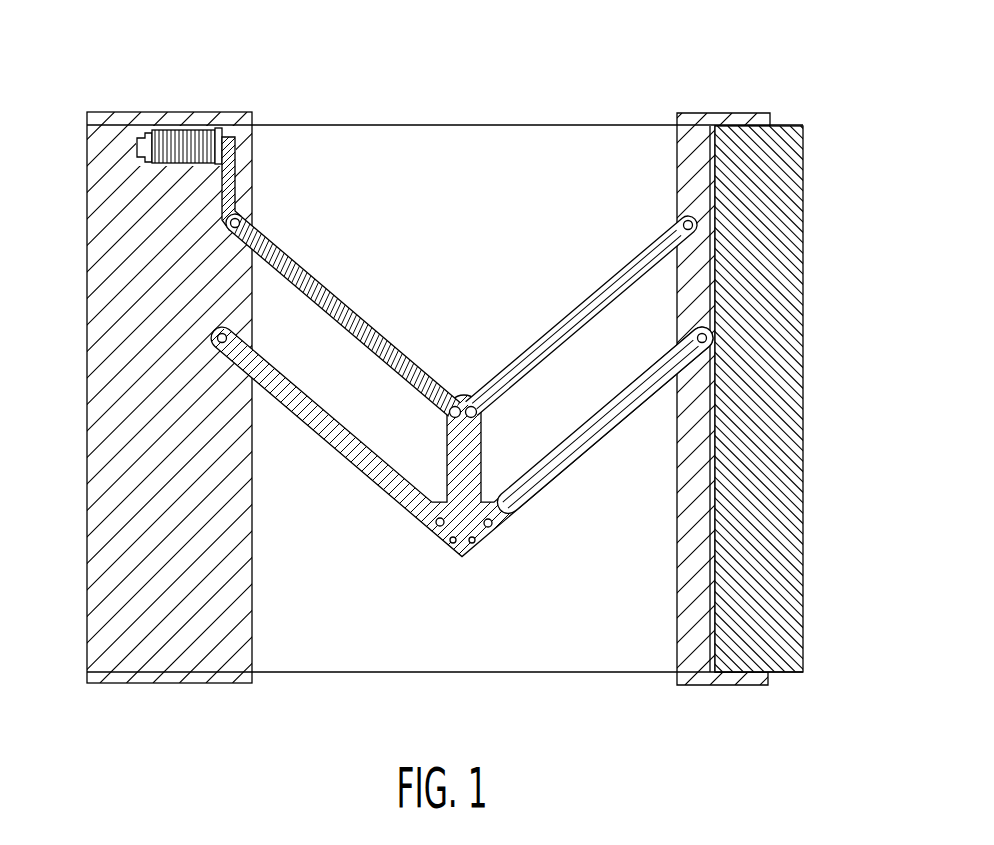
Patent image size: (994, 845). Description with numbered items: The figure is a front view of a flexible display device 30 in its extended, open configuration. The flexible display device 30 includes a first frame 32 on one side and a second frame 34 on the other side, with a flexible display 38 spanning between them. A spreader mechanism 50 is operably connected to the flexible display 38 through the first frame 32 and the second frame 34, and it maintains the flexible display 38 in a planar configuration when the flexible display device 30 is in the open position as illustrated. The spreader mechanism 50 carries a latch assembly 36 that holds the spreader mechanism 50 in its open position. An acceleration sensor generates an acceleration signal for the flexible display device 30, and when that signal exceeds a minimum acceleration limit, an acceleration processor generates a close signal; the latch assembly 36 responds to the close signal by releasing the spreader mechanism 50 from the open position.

The flexible display device 30 is at (670, 85).
The first frame 32 is at (160, 686).
The second frame 34 is at (726, 680).
The latch assembly 36 is at (199, 106).
The flexible display 38 is at (455, 152).
The spreader mechanism 50 is at (531, 500).